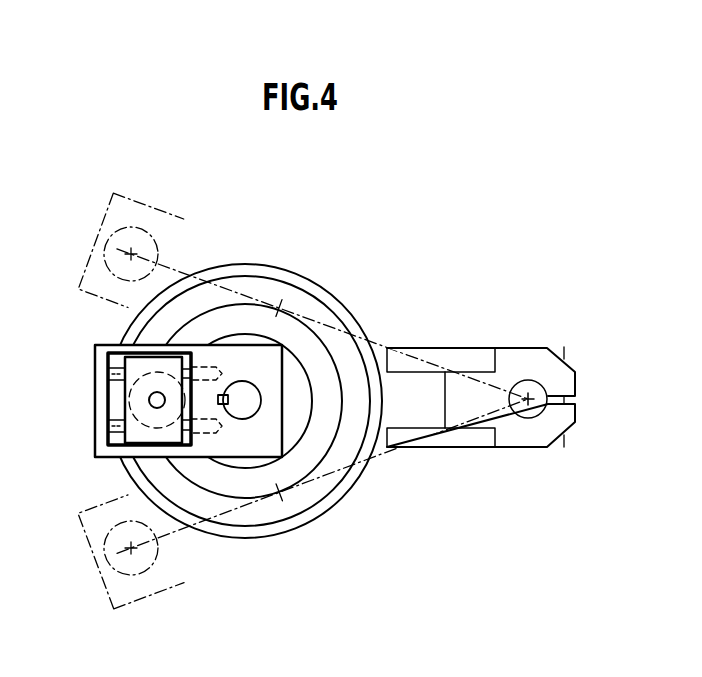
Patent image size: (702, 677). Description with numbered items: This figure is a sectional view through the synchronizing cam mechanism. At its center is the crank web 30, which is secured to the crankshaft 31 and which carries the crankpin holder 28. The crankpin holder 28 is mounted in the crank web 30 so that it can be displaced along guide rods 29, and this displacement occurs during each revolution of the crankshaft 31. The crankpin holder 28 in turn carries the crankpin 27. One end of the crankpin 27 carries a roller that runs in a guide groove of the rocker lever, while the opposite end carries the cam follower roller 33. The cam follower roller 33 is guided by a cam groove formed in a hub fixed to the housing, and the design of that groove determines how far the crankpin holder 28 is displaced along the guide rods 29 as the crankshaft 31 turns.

The crankpin 27 is at (149, 400).
The crankpin holder 28 is at (137, 365).
The guide rods 29 is at (112, 372).
The crank web 30 is at (282, 457).
The crankshaft 31 is at (243, 386).
The cam follower roller 33 is at (152, 428).